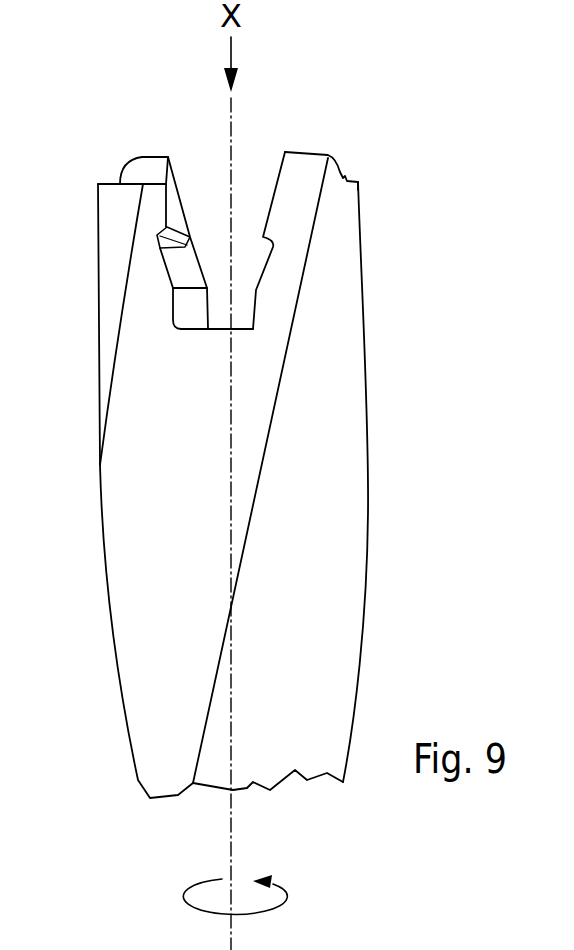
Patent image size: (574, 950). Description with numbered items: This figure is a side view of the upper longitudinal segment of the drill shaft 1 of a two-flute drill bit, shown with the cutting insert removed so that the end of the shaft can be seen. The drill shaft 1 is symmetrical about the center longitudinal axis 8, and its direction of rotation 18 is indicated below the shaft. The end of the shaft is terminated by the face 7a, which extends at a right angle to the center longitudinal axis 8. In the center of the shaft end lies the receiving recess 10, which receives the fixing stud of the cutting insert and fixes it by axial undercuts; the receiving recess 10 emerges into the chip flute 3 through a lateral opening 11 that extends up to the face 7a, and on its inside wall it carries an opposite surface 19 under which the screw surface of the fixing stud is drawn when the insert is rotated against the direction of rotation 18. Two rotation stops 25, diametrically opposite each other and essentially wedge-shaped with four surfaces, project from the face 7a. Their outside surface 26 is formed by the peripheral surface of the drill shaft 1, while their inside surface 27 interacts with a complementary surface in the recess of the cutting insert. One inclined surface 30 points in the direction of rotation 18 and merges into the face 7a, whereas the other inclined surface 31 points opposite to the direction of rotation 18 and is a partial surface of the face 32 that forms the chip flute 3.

The drill shaft 1 is at (312, 558).
The chip flute 3 is at (142, 518).
The face 7a is at (130, 167).
The center longitudinal axis 8 is at (237, 798).
The receiving recess 10 is at (243, 287).
The lateral opening 11 is at (170, 266).
The direction of rotation 18 is at (288, 895).
The opposite surface 19 is at (157, 245).
The rotation stop 25 is at (155, 155).
The outside surface 26 is at (342, 176).
The inside surface 27 is at (175, 207).
The inclined surface 30 is at (143, 167).
The inclined surface 31 is at (310, 177).
The face 32 is at (157, 652).